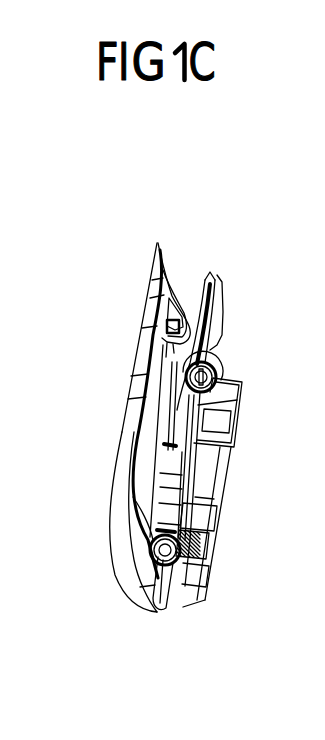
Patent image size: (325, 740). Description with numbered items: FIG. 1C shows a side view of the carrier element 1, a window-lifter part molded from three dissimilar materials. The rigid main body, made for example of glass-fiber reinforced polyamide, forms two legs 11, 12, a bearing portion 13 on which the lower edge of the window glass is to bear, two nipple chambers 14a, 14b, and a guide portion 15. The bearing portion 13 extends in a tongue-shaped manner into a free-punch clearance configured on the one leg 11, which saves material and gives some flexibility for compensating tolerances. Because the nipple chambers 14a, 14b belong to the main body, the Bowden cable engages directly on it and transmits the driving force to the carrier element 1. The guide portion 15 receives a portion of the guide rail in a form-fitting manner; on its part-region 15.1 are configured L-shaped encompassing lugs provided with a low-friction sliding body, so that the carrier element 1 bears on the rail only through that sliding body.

The carrier element 1 is at (247, 242).
The leg 11 is at (222, 298).
The leg 12 is at (155, 268).
The bearing portion 13 is at (158, 465).
The nipple chamber 14a is at (220, 360).
The nipple chamber 14b is at (173, 560).
The guide portion 15 is at (224, 478).
The part-region of the guide portion 15.1 is at (220, 427).